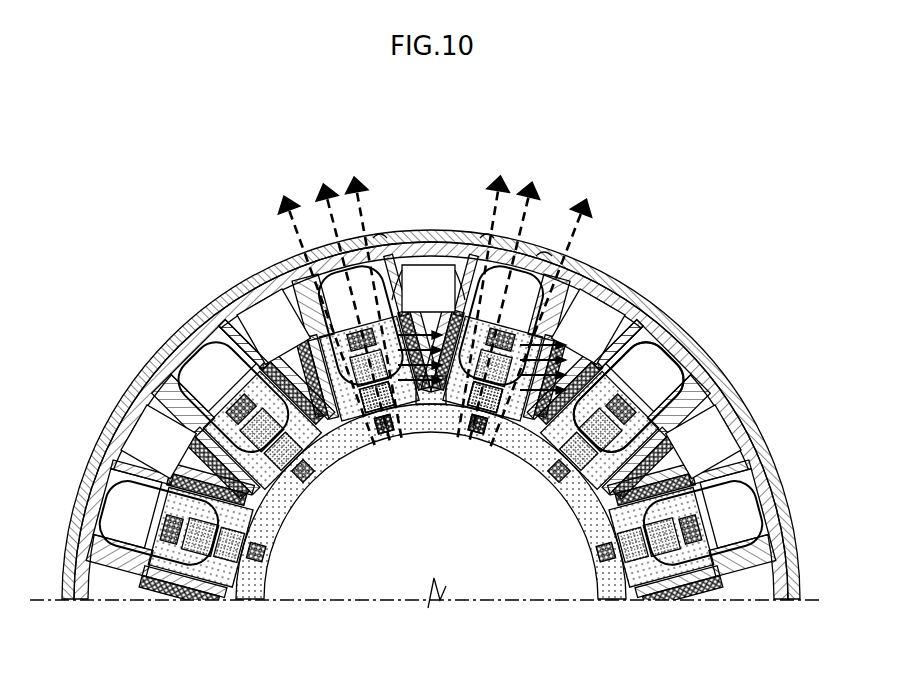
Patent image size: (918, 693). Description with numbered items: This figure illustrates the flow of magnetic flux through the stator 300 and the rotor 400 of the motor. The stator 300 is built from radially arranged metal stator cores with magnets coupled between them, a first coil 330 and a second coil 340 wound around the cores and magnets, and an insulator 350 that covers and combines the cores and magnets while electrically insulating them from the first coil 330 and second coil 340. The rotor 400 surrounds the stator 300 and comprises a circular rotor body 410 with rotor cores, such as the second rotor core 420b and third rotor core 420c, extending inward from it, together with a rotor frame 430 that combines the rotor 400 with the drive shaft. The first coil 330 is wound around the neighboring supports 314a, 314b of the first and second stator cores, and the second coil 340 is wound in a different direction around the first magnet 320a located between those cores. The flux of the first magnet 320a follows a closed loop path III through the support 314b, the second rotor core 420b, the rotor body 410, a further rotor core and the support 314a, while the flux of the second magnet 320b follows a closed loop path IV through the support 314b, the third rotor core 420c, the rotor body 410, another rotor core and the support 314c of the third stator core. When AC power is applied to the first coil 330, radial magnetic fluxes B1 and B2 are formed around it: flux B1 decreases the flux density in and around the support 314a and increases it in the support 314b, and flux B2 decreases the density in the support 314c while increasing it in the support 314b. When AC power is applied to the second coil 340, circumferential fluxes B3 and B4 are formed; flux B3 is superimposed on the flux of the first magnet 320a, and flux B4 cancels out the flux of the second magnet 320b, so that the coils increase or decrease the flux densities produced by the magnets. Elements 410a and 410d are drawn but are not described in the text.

The stator 300 is at (588, 539).
The support of the first stator core 314a is at (383, 428).
The support of the second stator core 314b is at (443, 380).
The support of the third stator core 314c is at (512, 430).
The first magnet 320a is at (360, 420).
The second magnet 320b is at (490, 418).
The first coil 330 is at (247, 313).
The second coil 340 is at (545, 252).
The insulator 350 is at (613, 312).
The rotor 400 is at (444, 414).
The rotor body 410 is at (730, 428).
The first tooth hook 410a is at (372, 237).
The second tooth hook 410d is at (496, 238).
The second rotor core 420b is at (414, 264).
The third rotor core 420c is at (446, 264).
The rotor frame 430 is at (722, 381).
The magnetic flux B1 is at (337, 300).
The magnetic flux B2 is at (525, 301).
The magnetic flux B3 is at (420, 348).
The magnetic flux B4 is at (546, 367).
The closed loop path III is at (311, 252).
The closed loop path IV is at (190, 345).